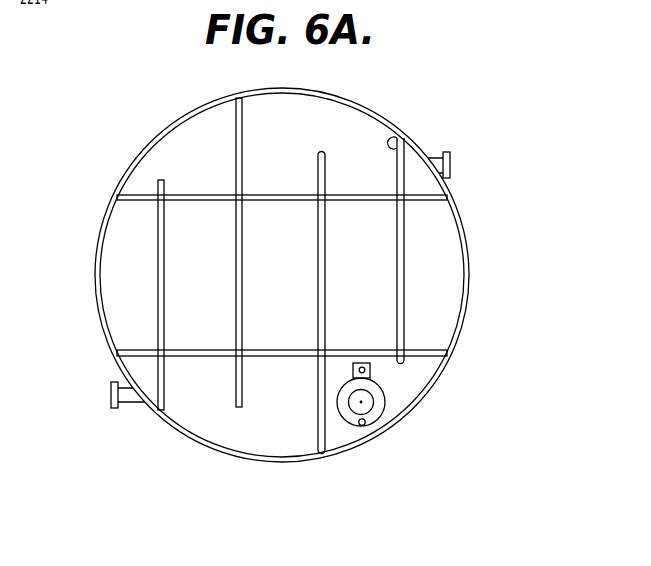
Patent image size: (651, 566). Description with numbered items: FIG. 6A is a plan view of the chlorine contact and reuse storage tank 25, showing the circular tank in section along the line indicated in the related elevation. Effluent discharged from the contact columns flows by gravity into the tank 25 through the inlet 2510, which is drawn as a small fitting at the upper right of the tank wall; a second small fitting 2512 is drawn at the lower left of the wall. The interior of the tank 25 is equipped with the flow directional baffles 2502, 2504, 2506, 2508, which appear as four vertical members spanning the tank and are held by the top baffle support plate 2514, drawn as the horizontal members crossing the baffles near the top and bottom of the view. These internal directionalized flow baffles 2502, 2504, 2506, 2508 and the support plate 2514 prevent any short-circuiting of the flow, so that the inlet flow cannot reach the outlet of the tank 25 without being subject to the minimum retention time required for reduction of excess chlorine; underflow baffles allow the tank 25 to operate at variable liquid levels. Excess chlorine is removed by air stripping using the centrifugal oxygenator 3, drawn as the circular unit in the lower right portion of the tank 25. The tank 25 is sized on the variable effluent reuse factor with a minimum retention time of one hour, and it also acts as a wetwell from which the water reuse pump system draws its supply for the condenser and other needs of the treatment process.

The chlorine contact and reuse storage tank 25 is at (482, 272).
The flow directional baffle 2502 is at (397, 137).
The flow directional baffle 2504 is at (326, 156).
The flow directional baffle 2506 is at (243, 147).
The flow directional baffle 2508 is at (160, 180).
The inlet 2510 is at (451, 163).
The mounting bracket 2512 is at (110, 394).
The top baffle support plate 2514 is at (137, 202).
The centrifugal oxygenator 3 is at (385, 400).